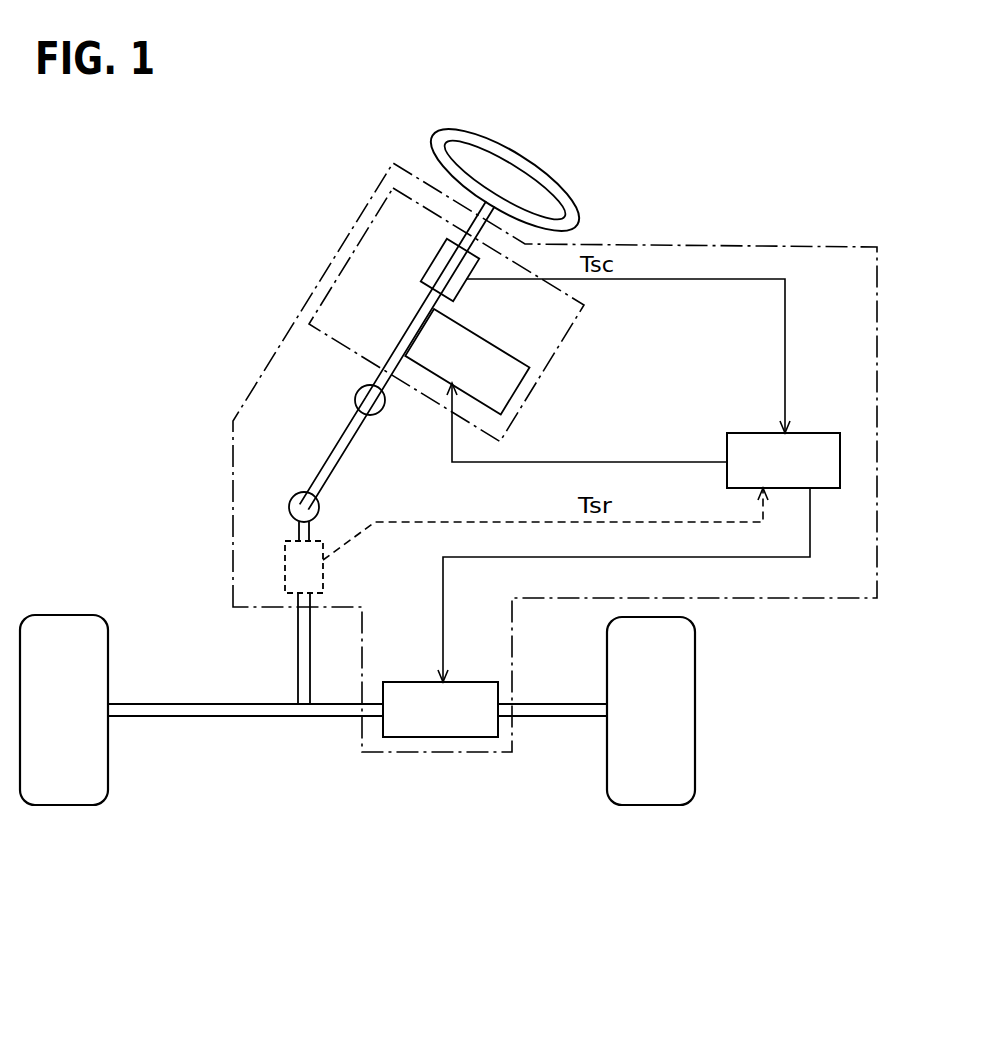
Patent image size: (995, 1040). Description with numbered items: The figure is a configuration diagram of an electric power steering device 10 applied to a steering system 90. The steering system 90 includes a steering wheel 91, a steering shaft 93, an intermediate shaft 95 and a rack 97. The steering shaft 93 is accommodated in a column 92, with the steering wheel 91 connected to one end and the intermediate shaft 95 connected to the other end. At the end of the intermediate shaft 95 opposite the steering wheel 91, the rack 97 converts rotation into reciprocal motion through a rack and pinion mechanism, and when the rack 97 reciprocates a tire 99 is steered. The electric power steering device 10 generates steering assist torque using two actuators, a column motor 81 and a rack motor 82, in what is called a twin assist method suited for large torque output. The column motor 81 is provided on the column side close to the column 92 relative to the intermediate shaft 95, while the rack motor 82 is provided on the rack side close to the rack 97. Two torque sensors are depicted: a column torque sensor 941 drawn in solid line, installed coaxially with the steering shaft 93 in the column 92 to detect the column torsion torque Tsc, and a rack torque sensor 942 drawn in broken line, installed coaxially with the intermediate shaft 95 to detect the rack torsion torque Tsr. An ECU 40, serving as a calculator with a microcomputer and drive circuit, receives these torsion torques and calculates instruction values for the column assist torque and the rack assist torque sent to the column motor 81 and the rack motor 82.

The electric power steering device 10 is at (740, 246).
The ECU 40 is at (755, 433).
The column motor 81 is at (480, 334).
The rack motor 82 is at (408, 680).
The steering system 90 is at (195, 330).
The steering wheel 91 is at (532, 170).
The column 92 is at (546, 372).
The steering shaft 93 is at (393, 357).
The column torque sensor 941 is at (440, 272).
The rack torque sensor 942 is at (292, 573).
The intermediate shaft 95 is at (300, 649).
The rack 97 is at (203, 717).
The tire 99 is at (60, 806).